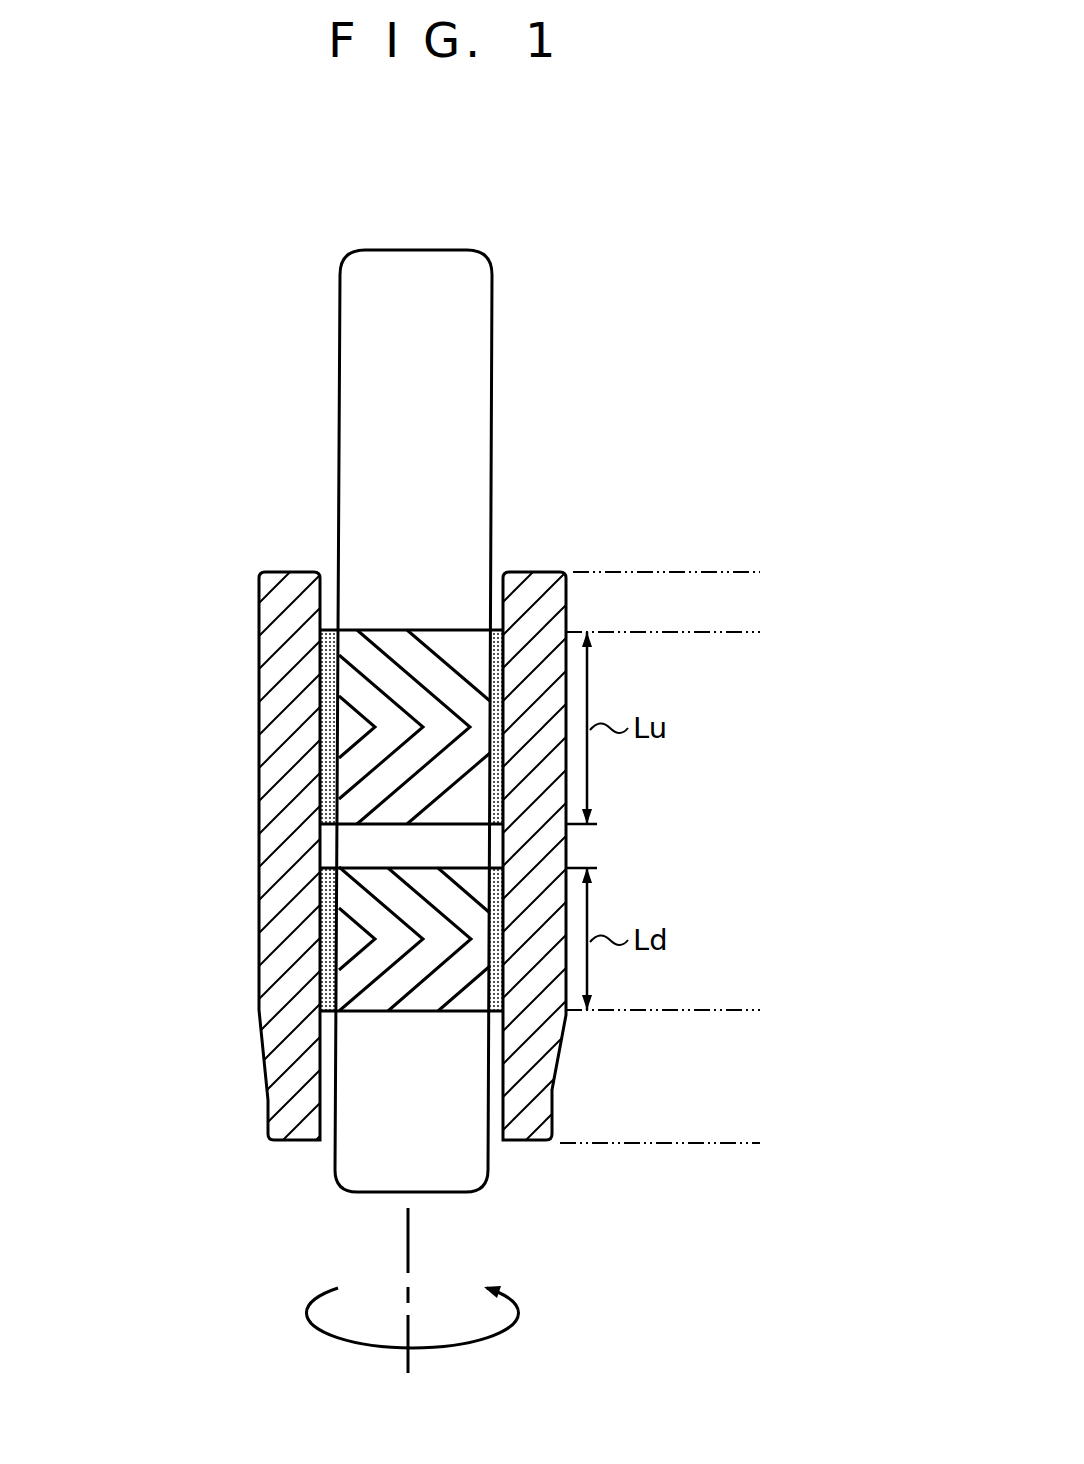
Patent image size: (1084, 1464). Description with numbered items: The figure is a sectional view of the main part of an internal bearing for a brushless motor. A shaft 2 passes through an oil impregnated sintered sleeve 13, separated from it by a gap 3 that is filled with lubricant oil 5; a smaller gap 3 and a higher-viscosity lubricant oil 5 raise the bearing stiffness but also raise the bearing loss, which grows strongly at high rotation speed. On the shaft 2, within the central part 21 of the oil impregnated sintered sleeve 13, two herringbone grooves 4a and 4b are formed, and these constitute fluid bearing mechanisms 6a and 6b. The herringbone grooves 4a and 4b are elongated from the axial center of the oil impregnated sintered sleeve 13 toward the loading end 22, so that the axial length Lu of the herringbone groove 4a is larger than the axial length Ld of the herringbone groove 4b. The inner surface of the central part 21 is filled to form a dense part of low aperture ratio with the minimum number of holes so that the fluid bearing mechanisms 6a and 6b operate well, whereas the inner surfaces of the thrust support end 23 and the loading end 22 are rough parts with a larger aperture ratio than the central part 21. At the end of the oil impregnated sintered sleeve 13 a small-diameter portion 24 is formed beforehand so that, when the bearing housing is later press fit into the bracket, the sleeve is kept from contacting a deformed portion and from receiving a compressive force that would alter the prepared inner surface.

The shaft 2 is at (493, 413).
The gap 3 is at (333, 587).
The herringbone groove 4a is at (402, 809).
The herringbone groove 4b is at (403, 1007).
The lubricant oil 5 is at (328, 792).
The fluid bearing mechanism 6a is at (243, 632).
The fluid bearing mechanism 6b is at (243, 865).
The oil impregnated sintered sleeve 13 is at (544, 600).
The central part 21 is at (703, 632).
The loading end 22 is at (760, 572).
The thrust support end 23 is at (753, 1010).
The small-diameter portion 24 is at (257, 1108).